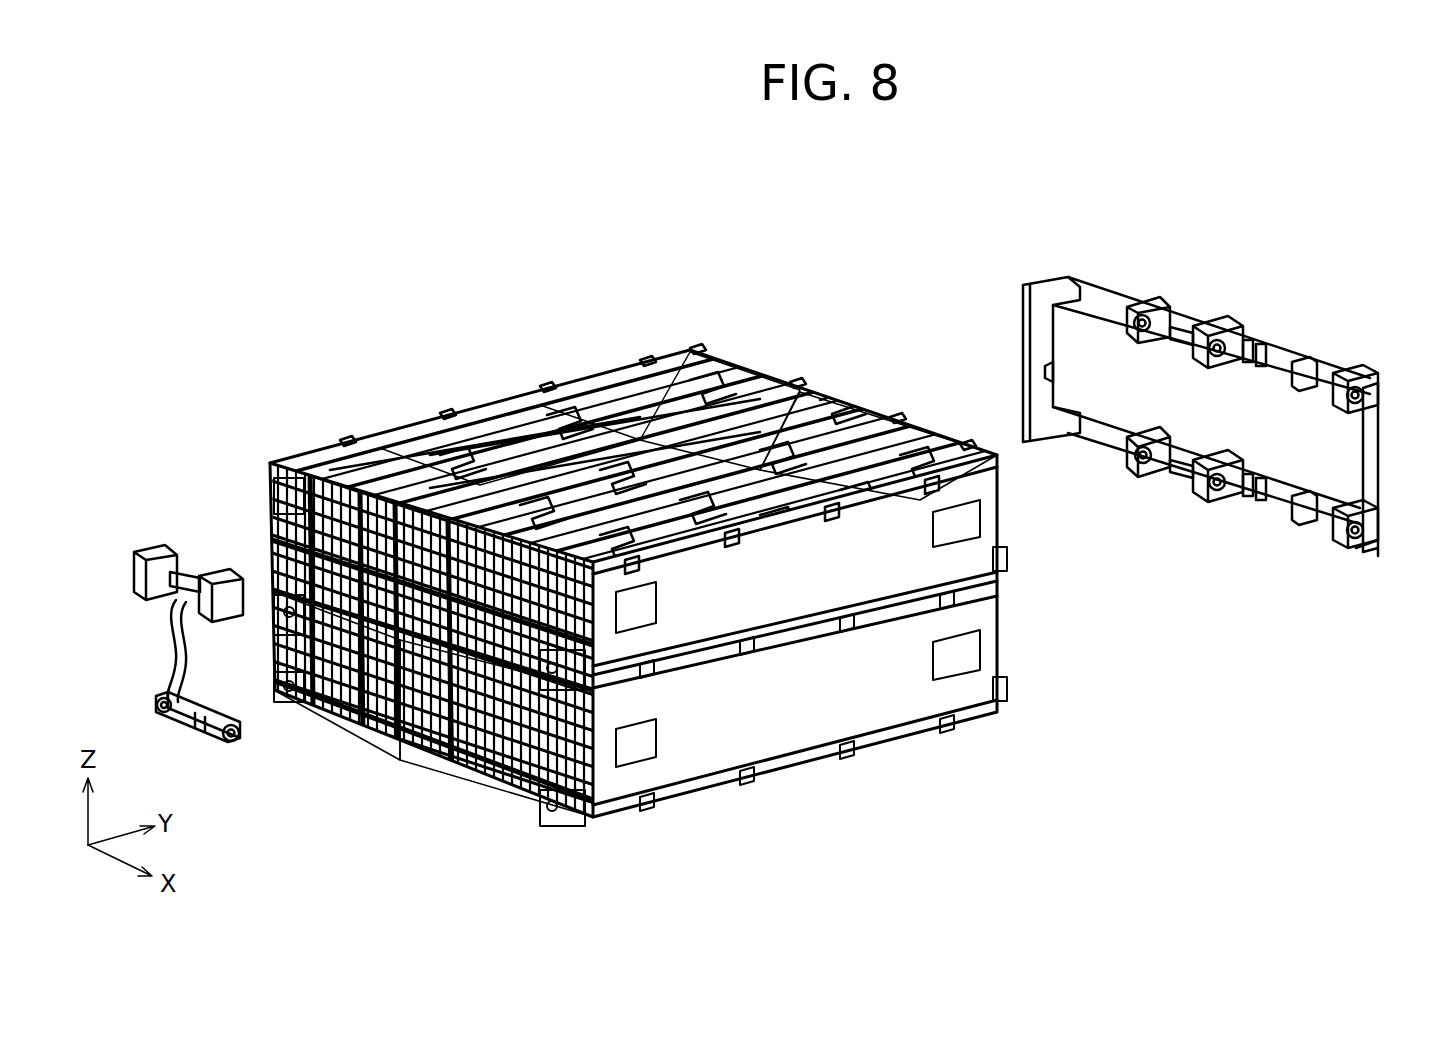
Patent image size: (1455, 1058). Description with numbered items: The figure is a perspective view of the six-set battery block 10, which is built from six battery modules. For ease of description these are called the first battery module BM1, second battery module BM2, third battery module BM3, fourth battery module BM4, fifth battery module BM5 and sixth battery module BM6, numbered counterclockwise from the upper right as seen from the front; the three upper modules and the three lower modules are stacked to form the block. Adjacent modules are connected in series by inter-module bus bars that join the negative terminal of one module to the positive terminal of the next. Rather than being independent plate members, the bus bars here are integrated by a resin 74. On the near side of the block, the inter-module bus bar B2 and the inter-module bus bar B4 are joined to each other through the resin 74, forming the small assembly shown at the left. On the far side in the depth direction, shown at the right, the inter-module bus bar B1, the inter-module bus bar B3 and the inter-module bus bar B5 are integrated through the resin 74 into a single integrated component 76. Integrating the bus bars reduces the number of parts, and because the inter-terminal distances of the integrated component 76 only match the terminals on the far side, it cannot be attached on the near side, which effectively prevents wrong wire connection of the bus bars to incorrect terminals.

The six-set battery block 10 is at (365, 305).
The first battery module BM1 is at (880, 425).
The second battery module BM2 is at (787, 397).
The third battery module BM3 is at (555, 400).
The fourth battery module BM4 is at (323, 742).
The fifth battery module BM5 is at (420, 772).
The sixth battery module BM6 is at (888, 700).
The inter-module bus bar B1 is at (1288, 357).
The inter-module bus bar B2 is at (190, 562).
The inter-module bus bar B3 is at (1078, 288).
The inter-module bus bar B4 is at (205, 737).
The inter-module bus bar B5 is at (1277, 495).
The resin 74 is at (172, 640).
The integrated component 76 is at (1250, 264).